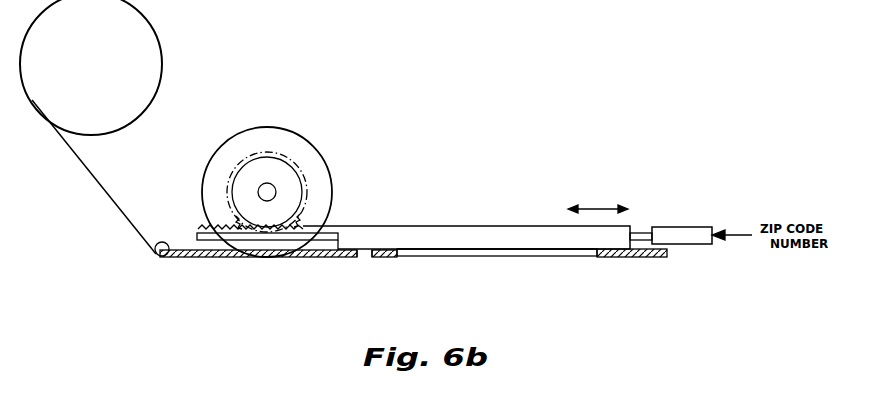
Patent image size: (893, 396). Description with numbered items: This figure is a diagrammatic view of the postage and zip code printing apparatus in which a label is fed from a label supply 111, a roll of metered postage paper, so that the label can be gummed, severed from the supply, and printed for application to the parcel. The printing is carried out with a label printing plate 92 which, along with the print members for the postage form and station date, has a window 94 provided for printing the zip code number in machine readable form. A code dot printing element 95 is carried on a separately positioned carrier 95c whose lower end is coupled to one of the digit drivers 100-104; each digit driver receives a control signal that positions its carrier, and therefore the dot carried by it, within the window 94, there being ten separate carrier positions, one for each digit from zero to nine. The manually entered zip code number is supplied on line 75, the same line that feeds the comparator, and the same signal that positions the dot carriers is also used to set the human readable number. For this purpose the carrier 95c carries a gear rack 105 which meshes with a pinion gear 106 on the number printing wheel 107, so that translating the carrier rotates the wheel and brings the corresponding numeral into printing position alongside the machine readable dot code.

The label supply 111 is at (140, 12).
The pinion gear 106 is at (302, 173).
The gear rack 105 is at (293, 223).
The number printing wheel 107 is at (268, 258).
The label printing plate 92 is at (347, 256).
The code dot printing element 95 is at (387, 257).
The carrier 95c is at (478, 233).
The window 94 is at (590, 250).
The digit drivers 100-104 is at (700, 226).
The line 75 is at (733, 237).